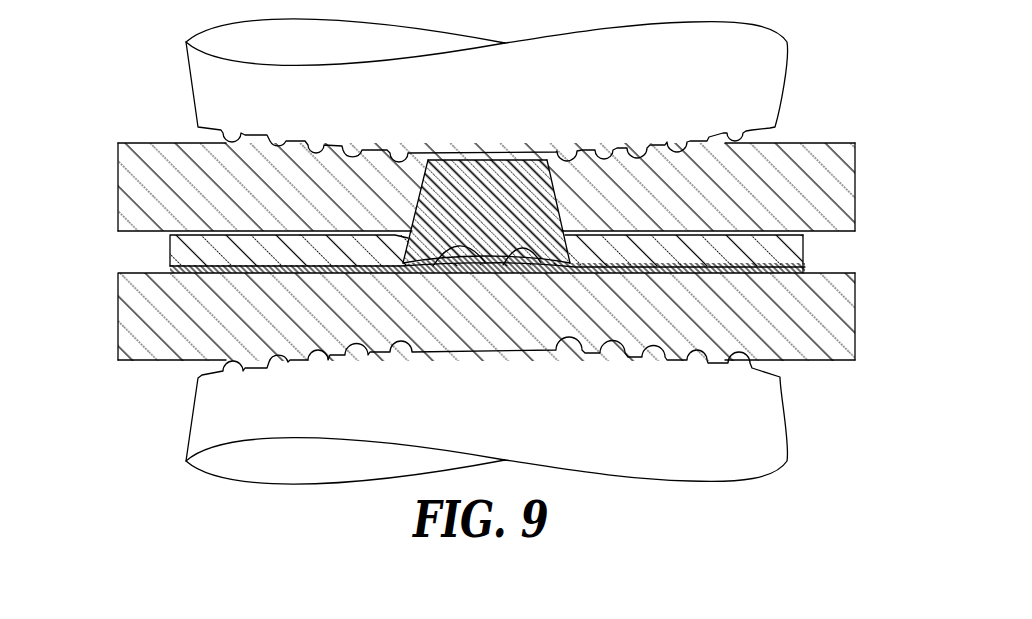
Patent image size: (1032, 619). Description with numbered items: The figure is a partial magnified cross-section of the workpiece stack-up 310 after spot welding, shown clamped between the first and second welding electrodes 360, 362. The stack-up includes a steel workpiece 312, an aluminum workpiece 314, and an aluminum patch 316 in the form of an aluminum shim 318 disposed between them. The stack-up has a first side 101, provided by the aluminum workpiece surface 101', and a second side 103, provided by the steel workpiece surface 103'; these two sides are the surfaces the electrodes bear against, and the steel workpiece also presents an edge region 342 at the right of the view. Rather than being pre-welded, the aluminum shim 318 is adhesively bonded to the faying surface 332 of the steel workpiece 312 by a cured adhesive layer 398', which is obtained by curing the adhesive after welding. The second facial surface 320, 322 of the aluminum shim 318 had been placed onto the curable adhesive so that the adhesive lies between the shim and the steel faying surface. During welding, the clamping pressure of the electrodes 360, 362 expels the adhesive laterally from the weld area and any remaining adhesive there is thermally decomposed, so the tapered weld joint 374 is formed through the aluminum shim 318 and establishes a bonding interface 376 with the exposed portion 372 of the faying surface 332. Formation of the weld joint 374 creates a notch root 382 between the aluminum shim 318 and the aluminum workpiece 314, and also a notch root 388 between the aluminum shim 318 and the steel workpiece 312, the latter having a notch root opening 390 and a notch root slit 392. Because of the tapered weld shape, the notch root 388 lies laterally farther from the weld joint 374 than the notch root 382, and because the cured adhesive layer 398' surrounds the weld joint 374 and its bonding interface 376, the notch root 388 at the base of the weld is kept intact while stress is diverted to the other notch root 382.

The workpiece stack-up 310 is at (109, 147).
The aluminum workpiece 314 is at (150, 187).
The first side 101 is at (149, 100).
The aluminum workpiece surface 101' is at (493, 100).
The steel workpiece 312 is at (140, 318).
The second side 103 is at (155, 401).
The steel workpiece surface 103' is at (495, 401).
The lower plate edge 342 is at (828, 362).
The aluminum patch 316 is at (170, 242).
The second facial surface 320 is at (182, 236).
The second facial surface 322 is at (302, 270).
The notch root opening 390 is at (605, 274).
The faying surface 332 is at (806, 281).
The aluminum shim 318 is at (186, 250).
The cured adhesive layer 398' is at (327, 309).
The notch root 388 is at (600, 272).
The bonding interface 376 is at (433, 266).
The exposed portion 372 is at (503, 265).
The weld joint 374 is at (562, 212).
The notch root 382 is at (357, 229).
The notch root slit 392 is at (590, 268).
The first welding electrode 360 is at (537, 86).
The second welding electrode 362 is at (511, 421).